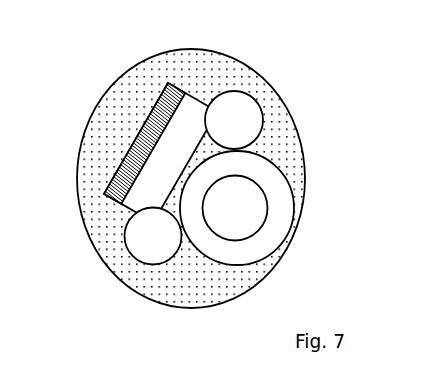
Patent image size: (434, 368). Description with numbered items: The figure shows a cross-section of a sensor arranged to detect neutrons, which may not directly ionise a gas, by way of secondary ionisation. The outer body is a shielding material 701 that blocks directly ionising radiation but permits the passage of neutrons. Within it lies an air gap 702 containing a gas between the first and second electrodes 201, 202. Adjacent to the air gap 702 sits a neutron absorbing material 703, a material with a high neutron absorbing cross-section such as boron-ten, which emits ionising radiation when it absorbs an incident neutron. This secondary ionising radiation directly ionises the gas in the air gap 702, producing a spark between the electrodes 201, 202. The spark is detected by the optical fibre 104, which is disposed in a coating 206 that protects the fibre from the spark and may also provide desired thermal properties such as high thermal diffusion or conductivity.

The shielding material 701 is at (142, 82).
The air gap 702 is at (132, 146).
The neutron absorbing material 703 is at (187, 118).
The first electrode 201 is at (252, 92).
The second electrode 202 is at (127, 229).
The optical fibre 104 is at (270, 203).
The coating 206 is at (282, 240).